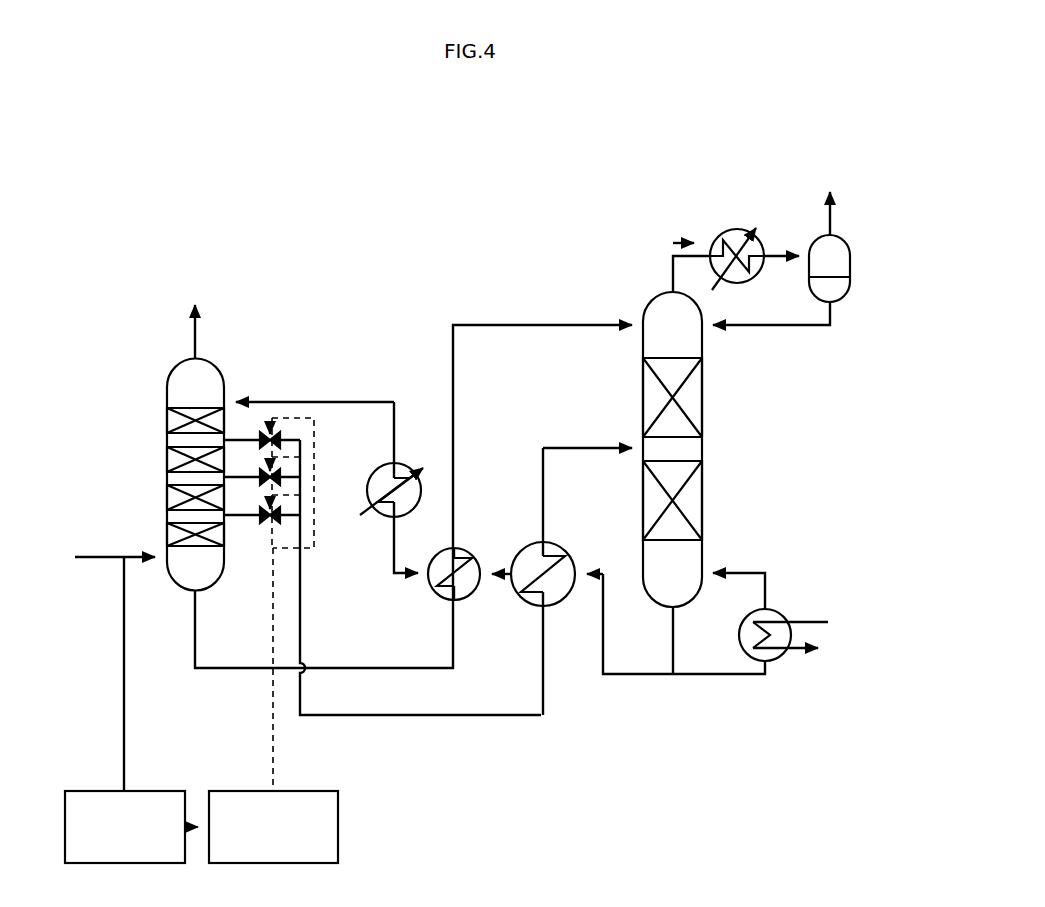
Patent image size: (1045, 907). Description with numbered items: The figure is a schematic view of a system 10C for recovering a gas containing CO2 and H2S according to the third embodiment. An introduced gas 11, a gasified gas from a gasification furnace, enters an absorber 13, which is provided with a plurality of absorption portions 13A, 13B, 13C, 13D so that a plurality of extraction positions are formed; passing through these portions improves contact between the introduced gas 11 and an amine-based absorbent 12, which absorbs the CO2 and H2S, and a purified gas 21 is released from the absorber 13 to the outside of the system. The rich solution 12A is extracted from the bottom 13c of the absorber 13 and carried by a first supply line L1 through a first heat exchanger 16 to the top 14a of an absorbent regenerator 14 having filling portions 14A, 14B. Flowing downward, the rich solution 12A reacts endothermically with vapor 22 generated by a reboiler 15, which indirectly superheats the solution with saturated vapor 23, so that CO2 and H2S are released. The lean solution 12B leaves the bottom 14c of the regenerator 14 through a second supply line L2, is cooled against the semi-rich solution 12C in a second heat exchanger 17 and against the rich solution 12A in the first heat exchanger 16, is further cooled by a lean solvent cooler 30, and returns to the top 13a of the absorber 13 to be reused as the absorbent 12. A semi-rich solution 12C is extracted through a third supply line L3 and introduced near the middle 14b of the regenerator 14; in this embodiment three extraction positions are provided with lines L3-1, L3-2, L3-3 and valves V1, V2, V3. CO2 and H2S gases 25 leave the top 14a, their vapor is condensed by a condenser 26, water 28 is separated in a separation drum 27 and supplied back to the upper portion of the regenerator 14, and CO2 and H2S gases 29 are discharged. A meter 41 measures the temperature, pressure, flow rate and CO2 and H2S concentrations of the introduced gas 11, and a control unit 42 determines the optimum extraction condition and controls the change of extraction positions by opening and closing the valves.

The system for recovering a gas containing CO2 and H2S 10C is at (490, 172).
The introduced gas 11 is at (90, 573).
The absorbent 12 is at (350, 388).
The rich solution 12A is at (387, 657).
The lean solution 12B is at (643, 687).
The semi-rich solution 12C is at (458, 730).
The absorber 13 is at (160, 374).
The top of the absorber 13a is at (208, 368).
The bottom of the absorber 13c is at (182, 595).
The absorption portion 13A is at (166, 420).
The absorption portion 13B is at (166, 460).
The absorption portion 13C is at (166, 496).
The absorption portion 13D is at (166, 533).
The absorbent regenerator 14 is at (716, 434).
The top of the regenerator 14a is at (655, 295).
The middle of the regenerator 14b is at (641, 445).
The bottom of the regenerator 14c is at (658, 608).
The filling portion 14A is at (700, 390).
The filling portion 14B is at (700, 488).
The reboiler 15 is at (772, 660).
The first heat exchanger 16 is at (460, 548).
The second heat exchanger 17 is at (556, 543).
The purified gas 21 is at (199, 318).
The vapor 22 is at (735, 572).
The saturated vapor 23 is at (814, 621).
The CO2 and H2S gases 25 is at (678, 241).
The condenser 26 is at (738, 229).
The separation drum 27 is at (852, 266).
The water 28 is at (813, 337).
The CO2 and H2S gases 29 is at (829, 190).
The lean solvent cooler 30 is at (404, 463).
The meter 41 is at (94, 790).
The control unit 42 is at (229, 790).
The first supply line L1 is at (395, 670).
The second supply line L2 is at (602, 640).
The third supply line L3 is at (362, 716).
The line L3-1 is at (248, 438).
The line L3-2 is at (240, 476).
The line L3-3 is at (246, 518).
The valve V1 is at (282, 437).
The valve V2 is at (282, 474).
The valve V3 is at (282, 518).